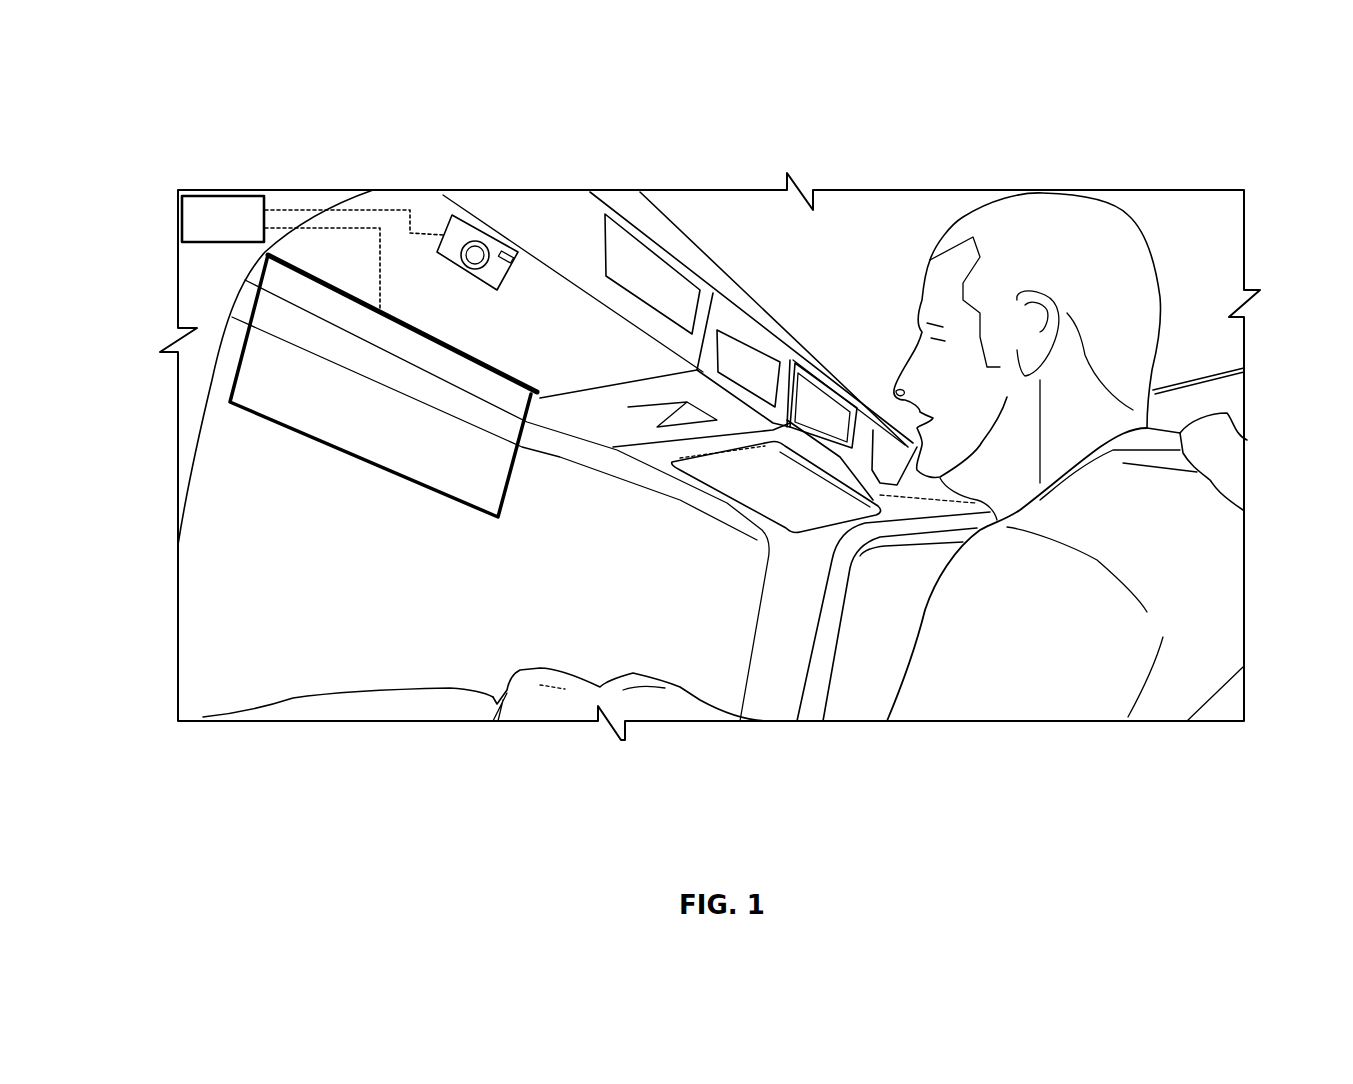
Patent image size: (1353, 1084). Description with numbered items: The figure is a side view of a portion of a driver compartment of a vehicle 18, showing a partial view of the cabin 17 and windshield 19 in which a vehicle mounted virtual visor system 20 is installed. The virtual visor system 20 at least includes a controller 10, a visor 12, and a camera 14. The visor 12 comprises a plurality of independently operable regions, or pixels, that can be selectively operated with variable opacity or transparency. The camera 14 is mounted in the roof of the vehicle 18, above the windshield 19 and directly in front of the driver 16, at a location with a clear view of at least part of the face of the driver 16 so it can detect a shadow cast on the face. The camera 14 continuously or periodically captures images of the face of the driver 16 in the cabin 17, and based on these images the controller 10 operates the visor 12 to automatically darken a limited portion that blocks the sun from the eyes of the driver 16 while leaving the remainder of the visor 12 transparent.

The controller 10 is at (196, 192).
The visor 12 is at (232, 375).
The camera 14 is at (452, 214).
The driver 16 is at (1248, 440).
The cabin 17 is at (747, 232).
The vehicle 18 is at (266, 670).
The windshield 19 is at (447, 655).
The vehicle mounted virtual visor system 20 is at (336, 151).